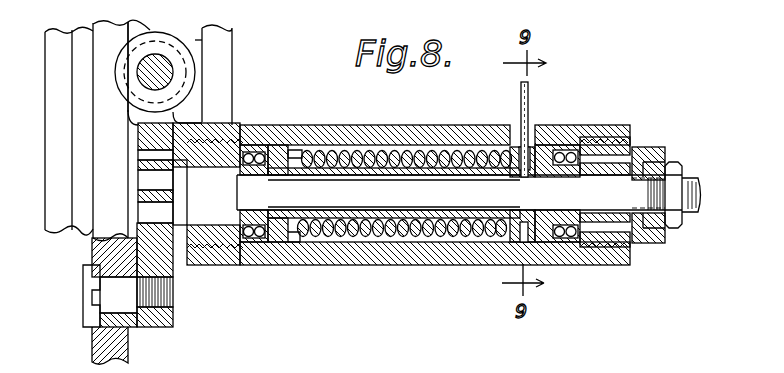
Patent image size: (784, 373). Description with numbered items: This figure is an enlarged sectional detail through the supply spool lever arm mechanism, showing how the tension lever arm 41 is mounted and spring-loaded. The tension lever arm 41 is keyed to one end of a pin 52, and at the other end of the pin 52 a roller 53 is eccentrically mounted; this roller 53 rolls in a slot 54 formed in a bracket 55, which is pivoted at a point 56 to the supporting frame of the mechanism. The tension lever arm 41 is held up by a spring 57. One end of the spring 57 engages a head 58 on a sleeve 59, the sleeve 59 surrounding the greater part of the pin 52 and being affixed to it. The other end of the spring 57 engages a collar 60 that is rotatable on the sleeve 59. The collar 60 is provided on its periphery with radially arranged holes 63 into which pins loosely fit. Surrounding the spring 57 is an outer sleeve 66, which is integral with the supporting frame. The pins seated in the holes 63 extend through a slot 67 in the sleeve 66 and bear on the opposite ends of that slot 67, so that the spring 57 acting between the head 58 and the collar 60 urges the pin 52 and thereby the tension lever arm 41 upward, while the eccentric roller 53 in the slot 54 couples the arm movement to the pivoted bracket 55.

The tension lever arm 41 is at (647, 247).
The pin 52 is at (668, 228).
The roller 53 is at (148, 168).
The slot 54 is at (150, 213).
The bracket 55 is at (173, 270).
The pivot point 56 is at (150, 310).
The spring 57 is at (380, 158).
The head 58 is at (285, 150).
The sleeve 59 is at (318, 230).
The collar 60 is at (550, 128).
The radially arranged holes 63 is at (522, 234).
The sleeve 66 is at (445, 125).
The slot 67 is at (518, 128).